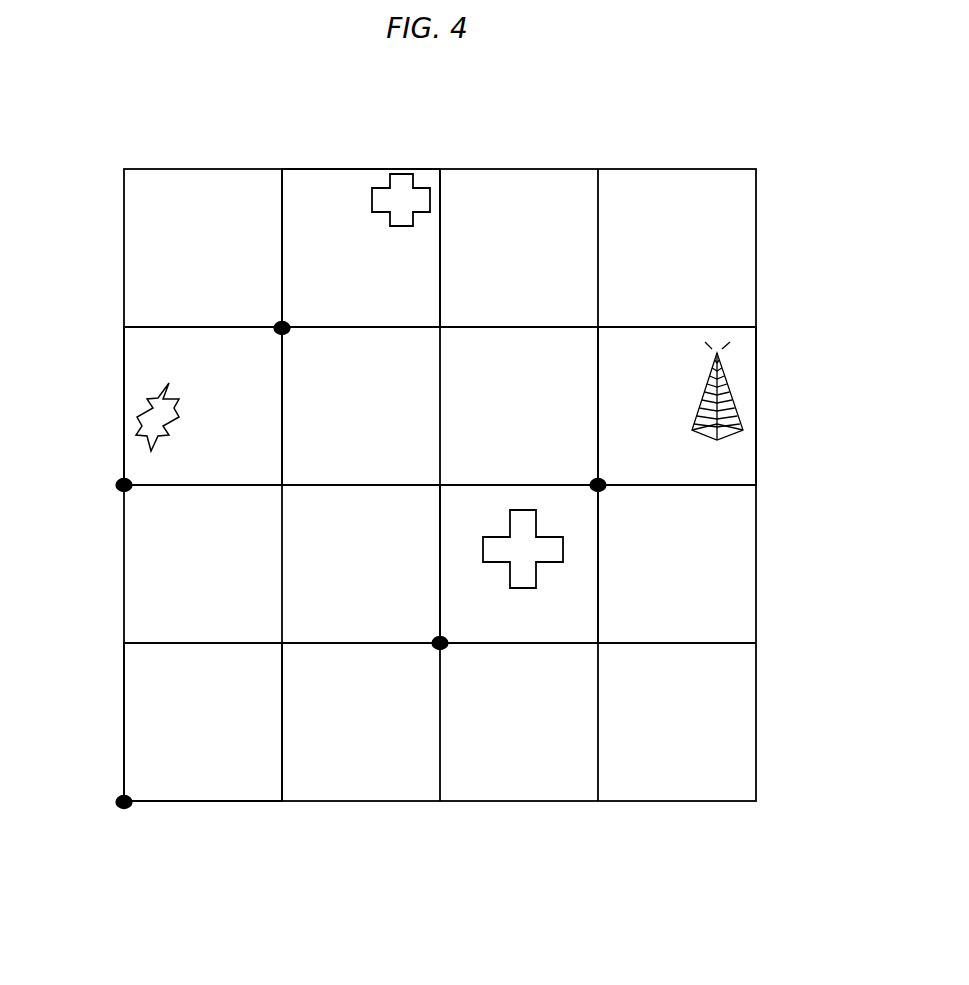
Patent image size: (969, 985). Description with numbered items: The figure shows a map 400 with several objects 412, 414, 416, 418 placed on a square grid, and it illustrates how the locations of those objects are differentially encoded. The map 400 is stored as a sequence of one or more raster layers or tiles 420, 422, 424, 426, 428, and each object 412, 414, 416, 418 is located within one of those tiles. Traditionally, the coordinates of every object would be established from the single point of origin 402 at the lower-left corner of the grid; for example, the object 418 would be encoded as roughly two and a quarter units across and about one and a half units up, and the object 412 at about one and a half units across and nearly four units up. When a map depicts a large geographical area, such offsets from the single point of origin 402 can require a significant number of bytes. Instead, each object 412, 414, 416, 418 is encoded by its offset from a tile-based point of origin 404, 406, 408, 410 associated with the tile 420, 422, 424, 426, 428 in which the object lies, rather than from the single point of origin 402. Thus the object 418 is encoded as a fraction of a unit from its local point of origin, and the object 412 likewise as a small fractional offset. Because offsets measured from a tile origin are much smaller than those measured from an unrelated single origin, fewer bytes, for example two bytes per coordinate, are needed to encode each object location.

The map 400 is at (667, 151).
The single point of origin 402 is at (128, 808).
The point of origin 404 is at (280, 330).
The point of origin 406 is at (122, 493).
The point of origin 408 is at (602, 482).
The point of origin 410 is at (444, 641).
The object 412 is at (413, 178).
The object 414 is at (137, 418).
The object 416 is at (740, 415).
The object 418 is at (563, 557).
The tile 420 is at (193, 755).
The tile 422 is at (347, 249).
The tile 424 is at (213, 436).
The tile 426 is at (650, 383).
The tile 428 is at (542, 631).